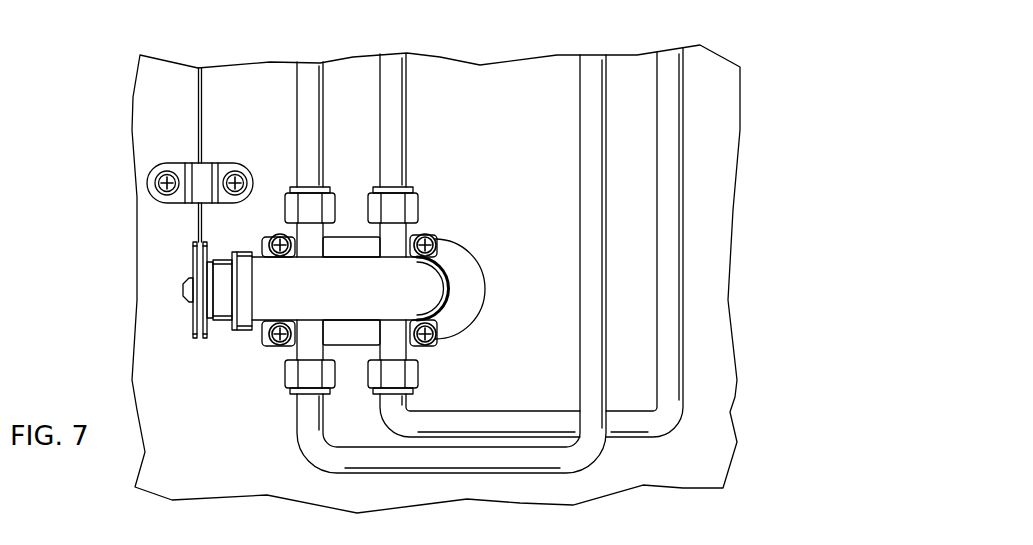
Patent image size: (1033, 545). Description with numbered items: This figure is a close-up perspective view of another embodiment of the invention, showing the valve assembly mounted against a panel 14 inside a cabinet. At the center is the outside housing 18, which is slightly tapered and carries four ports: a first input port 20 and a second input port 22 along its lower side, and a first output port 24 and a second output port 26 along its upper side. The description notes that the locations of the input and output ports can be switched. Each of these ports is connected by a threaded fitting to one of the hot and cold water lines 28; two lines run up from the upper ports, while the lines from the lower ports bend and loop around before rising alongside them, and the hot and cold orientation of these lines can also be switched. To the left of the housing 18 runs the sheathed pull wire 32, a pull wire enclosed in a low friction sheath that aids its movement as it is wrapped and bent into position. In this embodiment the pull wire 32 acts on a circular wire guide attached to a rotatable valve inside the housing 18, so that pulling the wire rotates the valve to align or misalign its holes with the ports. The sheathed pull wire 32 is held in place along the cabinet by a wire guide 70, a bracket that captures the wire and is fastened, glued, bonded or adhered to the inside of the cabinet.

The mounting panel 14 is at (518, 98).
The wire guide 70 is at (178, 165).
The sheathed pull wire 32 is at (199, 127).
The hot and cold water lines 28 is at (315, 117).
The second output port 26 is at (313, 240).
The first output port 24 is at (403, 233).
The outside housing 18 is at (432, 290).
The first input port 20 is at (308, 343).
The second input port 22 is at (400, 340).